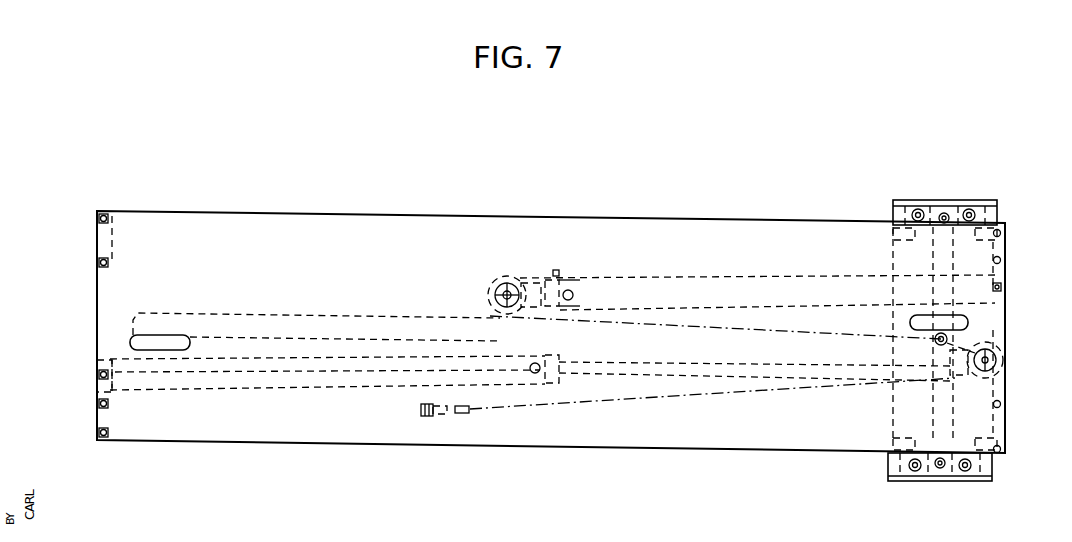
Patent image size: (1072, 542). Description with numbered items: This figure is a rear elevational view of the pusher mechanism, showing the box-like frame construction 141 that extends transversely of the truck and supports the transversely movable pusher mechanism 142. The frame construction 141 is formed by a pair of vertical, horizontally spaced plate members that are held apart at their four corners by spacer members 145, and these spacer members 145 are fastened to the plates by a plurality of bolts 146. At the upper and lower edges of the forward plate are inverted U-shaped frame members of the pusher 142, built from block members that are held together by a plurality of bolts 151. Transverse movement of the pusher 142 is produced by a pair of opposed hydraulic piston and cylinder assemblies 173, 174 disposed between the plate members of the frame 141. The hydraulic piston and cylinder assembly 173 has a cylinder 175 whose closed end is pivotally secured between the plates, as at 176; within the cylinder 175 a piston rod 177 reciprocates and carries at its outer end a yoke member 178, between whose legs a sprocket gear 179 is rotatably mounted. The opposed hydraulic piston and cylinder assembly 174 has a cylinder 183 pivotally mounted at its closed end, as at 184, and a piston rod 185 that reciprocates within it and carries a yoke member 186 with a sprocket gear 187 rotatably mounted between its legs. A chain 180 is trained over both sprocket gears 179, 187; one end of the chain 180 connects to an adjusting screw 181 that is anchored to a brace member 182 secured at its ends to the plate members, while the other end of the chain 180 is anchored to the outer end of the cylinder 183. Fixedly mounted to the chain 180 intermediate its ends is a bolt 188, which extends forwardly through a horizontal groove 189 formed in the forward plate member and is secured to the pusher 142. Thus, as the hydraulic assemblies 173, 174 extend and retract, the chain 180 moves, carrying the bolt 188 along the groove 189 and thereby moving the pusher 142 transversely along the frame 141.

The frame construction 141 is at (338, 202).
The pusher mechanism 142 is at (1011, 197).
The spacer members 145 is at (113, 234).
The bolts 146 is at (99, 220).
The bolts 151 is at (921, 210).
The hydraulic piston and cylinder assembly 173 is at (301, 380).
The hydraulic piston and cylinder assembly 174 is at (752, 288).
The cylinder 175 is at (231, 375).
The pivotal securement 176 is at (97, 380).
The piston rod 177 is at (655, 368).
The yoke member 178 is at (1004, 354).
The sprocket gear 179 is at (1006, 373).
The chain 180 is at (758, 392).
The adjusting screw 181 is at (455, 414).
The brace member 182 is at (437, 414).
The cylinder 183 is at (840, 282).
The pivotal mounting 184 is at (1003, 287).
The piston rod 185 is at (561, 274).
The yoke member 186 is at (523, 284).
The sprocket gear 187 is at (496, 278).
The bolt 188 is at (950, 337).
The horizontal groove 189 is at (347, 325).